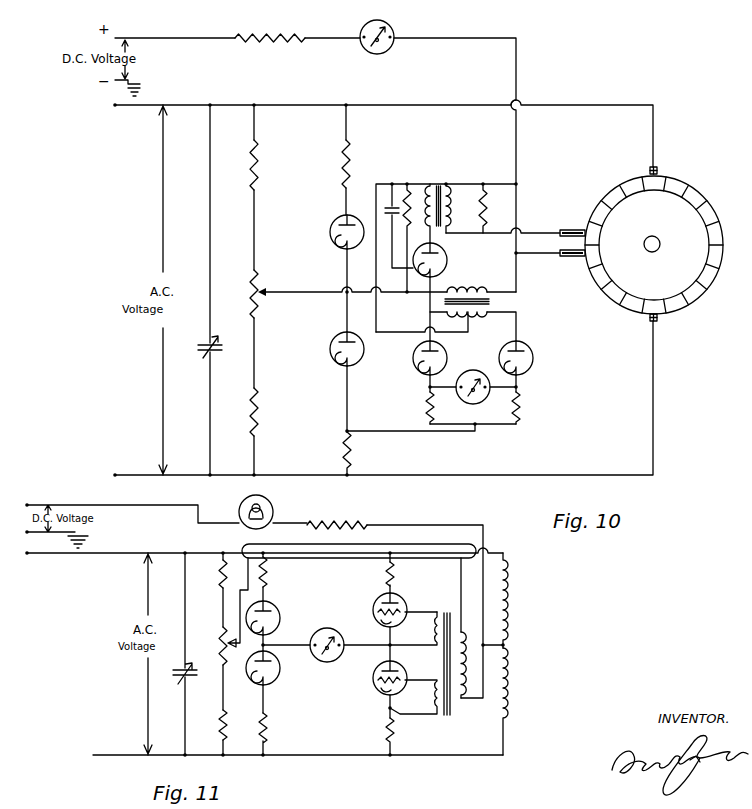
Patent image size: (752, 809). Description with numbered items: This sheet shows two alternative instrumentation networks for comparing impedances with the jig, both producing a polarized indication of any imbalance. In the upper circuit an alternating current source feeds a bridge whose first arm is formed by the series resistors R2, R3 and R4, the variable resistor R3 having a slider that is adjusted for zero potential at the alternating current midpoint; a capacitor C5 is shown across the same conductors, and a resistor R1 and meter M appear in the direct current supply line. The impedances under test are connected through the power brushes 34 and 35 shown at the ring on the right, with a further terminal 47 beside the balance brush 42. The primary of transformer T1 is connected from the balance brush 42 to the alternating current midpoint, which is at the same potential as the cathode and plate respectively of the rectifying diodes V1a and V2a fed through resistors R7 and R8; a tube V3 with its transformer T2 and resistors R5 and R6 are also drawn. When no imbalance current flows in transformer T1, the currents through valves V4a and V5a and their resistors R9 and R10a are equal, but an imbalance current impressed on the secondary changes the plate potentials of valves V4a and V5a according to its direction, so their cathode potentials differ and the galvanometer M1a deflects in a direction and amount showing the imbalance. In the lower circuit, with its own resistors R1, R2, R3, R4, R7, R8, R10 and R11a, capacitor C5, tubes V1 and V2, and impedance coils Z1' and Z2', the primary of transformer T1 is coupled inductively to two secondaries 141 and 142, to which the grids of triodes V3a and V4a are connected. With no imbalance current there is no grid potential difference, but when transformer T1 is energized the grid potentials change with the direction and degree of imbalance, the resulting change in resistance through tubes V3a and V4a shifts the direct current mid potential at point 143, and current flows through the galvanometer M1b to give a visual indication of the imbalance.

In FIG. 10, the resistor R1 is at (287, 40).
In FIG. 11, the resistor R1 is at (328, 527).
In FIG. 10, the meter M is at (390, 50).
In FIG. 10, the resistor R2 is at (264, 165).
In FIG. 11, the resistor R2 is at (228, 562).
In FIG. 10, the resistor R7 is at (357, 164).
In FIG. 11, the resistor R7 is at (268, 562).
In FIG. 10, the rectifying diode V1a is at (334, 240).
In FIG. 10, the transformer T2 is at (438, 190).
In FIG. 10, the resistor R5 is at (413, 238).
In FIG. 10, the resistor R6 is at (492, 208).
In FIG. 10, the vacuum tube V3 is at (446, 264).
In FIG. 10, the power brush 34 is at (658, 169).
In FIG. 10, the terminal 47 is at (571, 228).
In FIG. 10, the balance brush 42 is at (572, 258).
In FIG. 10, the power brush 35 is at (657, 320).
In FIG. 10, the variable resistor R3 is at (257, 299).
In FIG. 11, the variable resistor R3 is at (228, 652).
In FIG. 10, the variable capacitor C5 is at (214, 290).
In FIG. 11, the variable capacitor C5 is at (189, 654).
In FIG. 10, the rectifying diode V2a is at (336, 358).
In FIG. 10, the transformer T1 is at (493, 301).
In FIG. 11, the transformer T1 is at (452, 717).
In FIG. 10, the resistor R4 is at (257, 398).
In FIG. 11, the resistor R4 is at (228, 712).
In FIG. 10, the valve V4a is at (414, 362).
In FIG. 11, the valve V4a is at (404, 688).
In FIG. 10, the valve V5a is at (524, 366).
In FIG. 10, the galvanometer M1a is at (487, 400).
In FIG. 10, the resistor R9 is at (429, 404).
In FIG. 10, the resistor R10a is at (518, 411).
In FIG. 10, the resistor R8 is at (351, 441).
In FIG. 11, the resistor R8 is at (268, 716).
In FIG. 11, the vacuum tube V1 is at (278, 622).
In FIG. 11, the vacuum tube V2 is at (275, 680).
In FIG. 11, the galvanometer M1b is at (337, 656).
In FIG. 11, the resistor R10 is at (395, 575).
In FIG. 11, the point 143 is at (387, 641).
In FIG. 11, the triode V3a is at (398, 621).
In FIG. 11, the secondary 141 is at (425, 650).
In FIG. 11, the secondary 142 is at (425, 684).
In FIG. 11, the resistor R11a is at (393, 722).
In FIG. 11, the impedance coil Z1' is at (526, 600).
In FIG. 11, the impedance coil Z2' is at (526, 701).